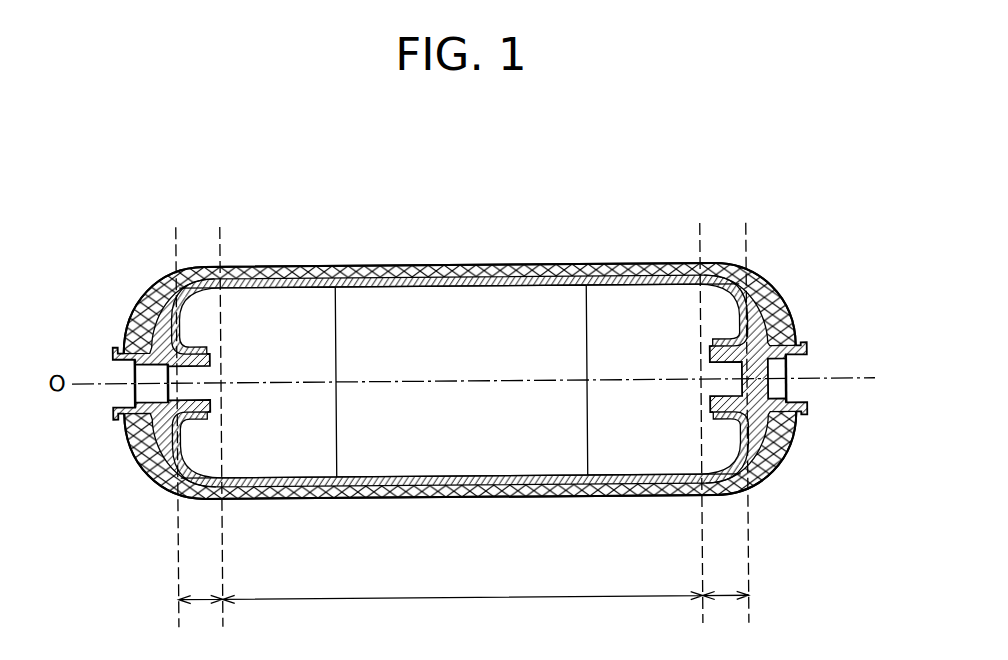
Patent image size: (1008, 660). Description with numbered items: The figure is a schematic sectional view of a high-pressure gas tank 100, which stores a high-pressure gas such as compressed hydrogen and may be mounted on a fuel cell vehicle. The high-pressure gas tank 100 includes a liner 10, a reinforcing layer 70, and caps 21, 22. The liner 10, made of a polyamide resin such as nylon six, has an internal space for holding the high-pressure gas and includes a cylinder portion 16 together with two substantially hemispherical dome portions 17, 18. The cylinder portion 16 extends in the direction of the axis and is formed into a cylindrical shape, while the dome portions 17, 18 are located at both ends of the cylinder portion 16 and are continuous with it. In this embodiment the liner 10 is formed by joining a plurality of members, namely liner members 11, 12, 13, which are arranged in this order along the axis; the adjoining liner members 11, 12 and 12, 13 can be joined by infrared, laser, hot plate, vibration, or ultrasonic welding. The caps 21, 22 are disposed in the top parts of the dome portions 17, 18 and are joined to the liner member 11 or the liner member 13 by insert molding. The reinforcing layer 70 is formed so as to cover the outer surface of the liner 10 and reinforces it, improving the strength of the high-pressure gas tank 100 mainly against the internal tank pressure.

The high-pressure gas tank 100 is at (641, 176).
The reinforcing layer 70 is at (413, 266).
The liner 10 is at (505, 475).
The liner member 11 is at (283, 464).
The liner member 12 is at (427, 463).
The liner member 13 is at (675, 464).
The cylinder portion 16 is at (463, 616).
The dome portion 17 is at (199, 433).
The dome portion 18 is at (724, 429).
The cap 21 is at (118, 349).
The cap 22 is at (807, 350).